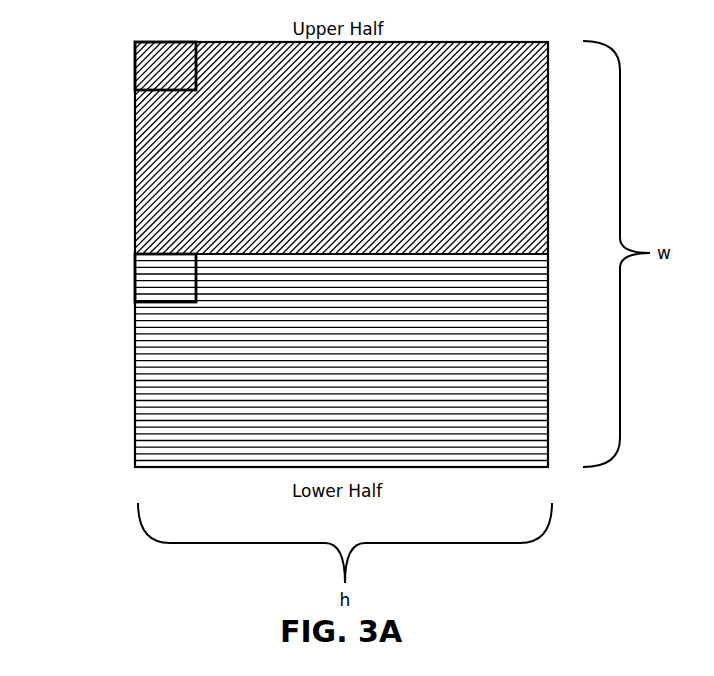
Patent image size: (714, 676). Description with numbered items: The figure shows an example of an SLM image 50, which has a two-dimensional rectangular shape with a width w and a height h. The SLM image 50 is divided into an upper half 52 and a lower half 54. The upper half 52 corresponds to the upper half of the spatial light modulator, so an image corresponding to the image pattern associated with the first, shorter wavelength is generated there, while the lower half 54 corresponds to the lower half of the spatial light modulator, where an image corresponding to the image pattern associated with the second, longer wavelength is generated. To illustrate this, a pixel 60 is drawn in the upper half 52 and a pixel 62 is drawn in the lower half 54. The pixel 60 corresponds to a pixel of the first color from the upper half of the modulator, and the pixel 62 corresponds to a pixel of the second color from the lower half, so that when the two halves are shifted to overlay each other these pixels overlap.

The SLM image 50 is at (98, 151).
The upper half 52 is at (548, 102).
The lower half 54 is at (548, 378).
The pixel 60 is at (135, 66).
The pixel 62 is at (135, 278).